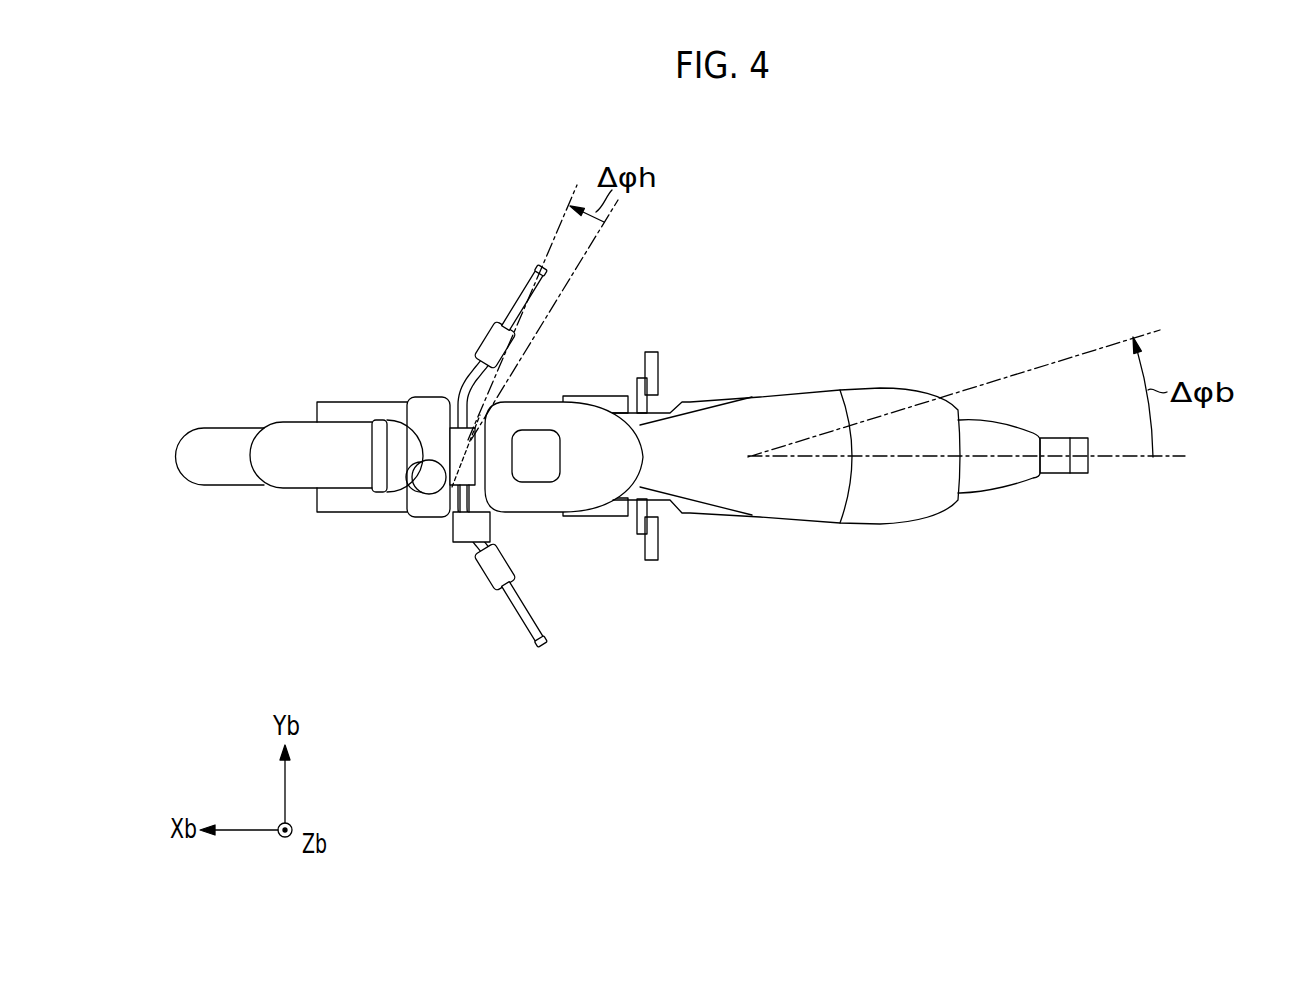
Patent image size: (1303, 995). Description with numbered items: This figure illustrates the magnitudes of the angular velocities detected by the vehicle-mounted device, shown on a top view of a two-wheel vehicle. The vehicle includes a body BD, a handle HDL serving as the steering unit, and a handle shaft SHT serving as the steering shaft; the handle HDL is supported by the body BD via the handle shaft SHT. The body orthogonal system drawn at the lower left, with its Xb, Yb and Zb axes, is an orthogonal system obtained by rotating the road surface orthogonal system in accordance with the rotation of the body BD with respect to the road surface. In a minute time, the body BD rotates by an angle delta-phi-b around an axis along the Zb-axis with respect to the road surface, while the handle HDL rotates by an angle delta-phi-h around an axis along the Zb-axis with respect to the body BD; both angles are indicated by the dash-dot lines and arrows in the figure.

The handle HDL is at (458, 423).
The body BD is at (690, 416).
The handle shaft SHT is at (452, 487).